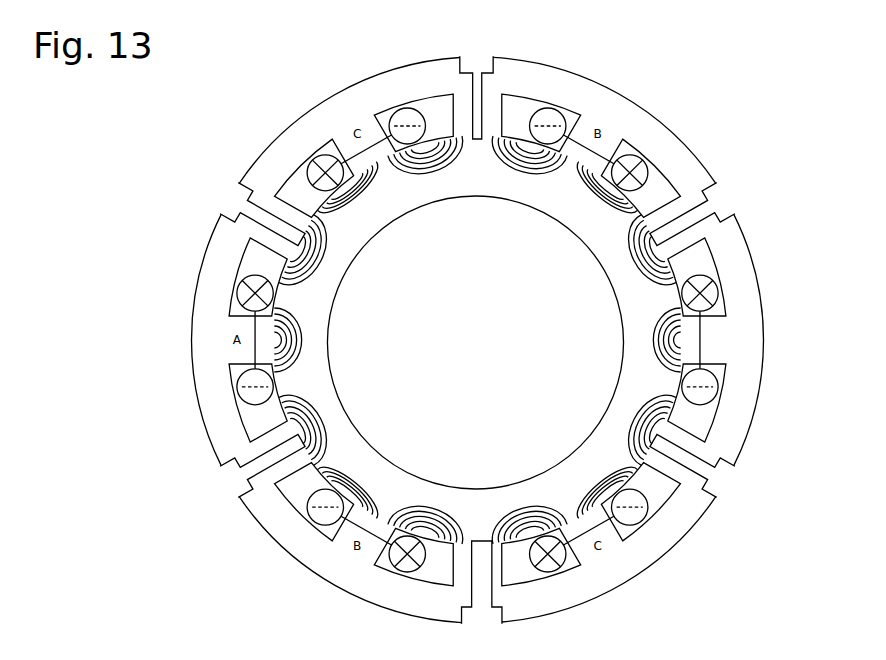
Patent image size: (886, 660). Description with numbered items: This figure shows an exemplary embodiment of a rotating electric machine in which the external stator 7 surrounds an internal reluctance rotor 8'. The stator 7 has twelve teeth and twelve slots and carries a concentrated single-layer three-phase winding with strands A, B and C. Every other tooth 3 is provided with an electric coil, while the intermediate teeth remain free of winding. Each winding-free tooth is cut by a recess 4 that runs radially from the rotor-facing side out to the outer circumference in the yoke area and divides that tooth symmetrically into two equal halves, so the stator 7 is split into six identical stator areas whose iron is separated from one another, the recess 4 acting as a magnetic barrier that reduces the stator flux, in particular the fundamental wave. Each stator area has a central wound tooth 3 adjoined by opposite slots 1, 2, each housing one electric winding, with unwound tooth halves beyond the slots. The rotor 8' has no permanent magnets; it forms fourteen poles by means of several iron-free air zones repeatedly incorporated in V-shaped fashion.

The slot 1 is at (700, 262).
The slot 2 is at (700, 415).
The tooth 3 is at (727, 333).
The recess 4 is at (690, 216).
The stator 7 is at (550, 80).
The reluctance rotor 8' is at (477, 340).